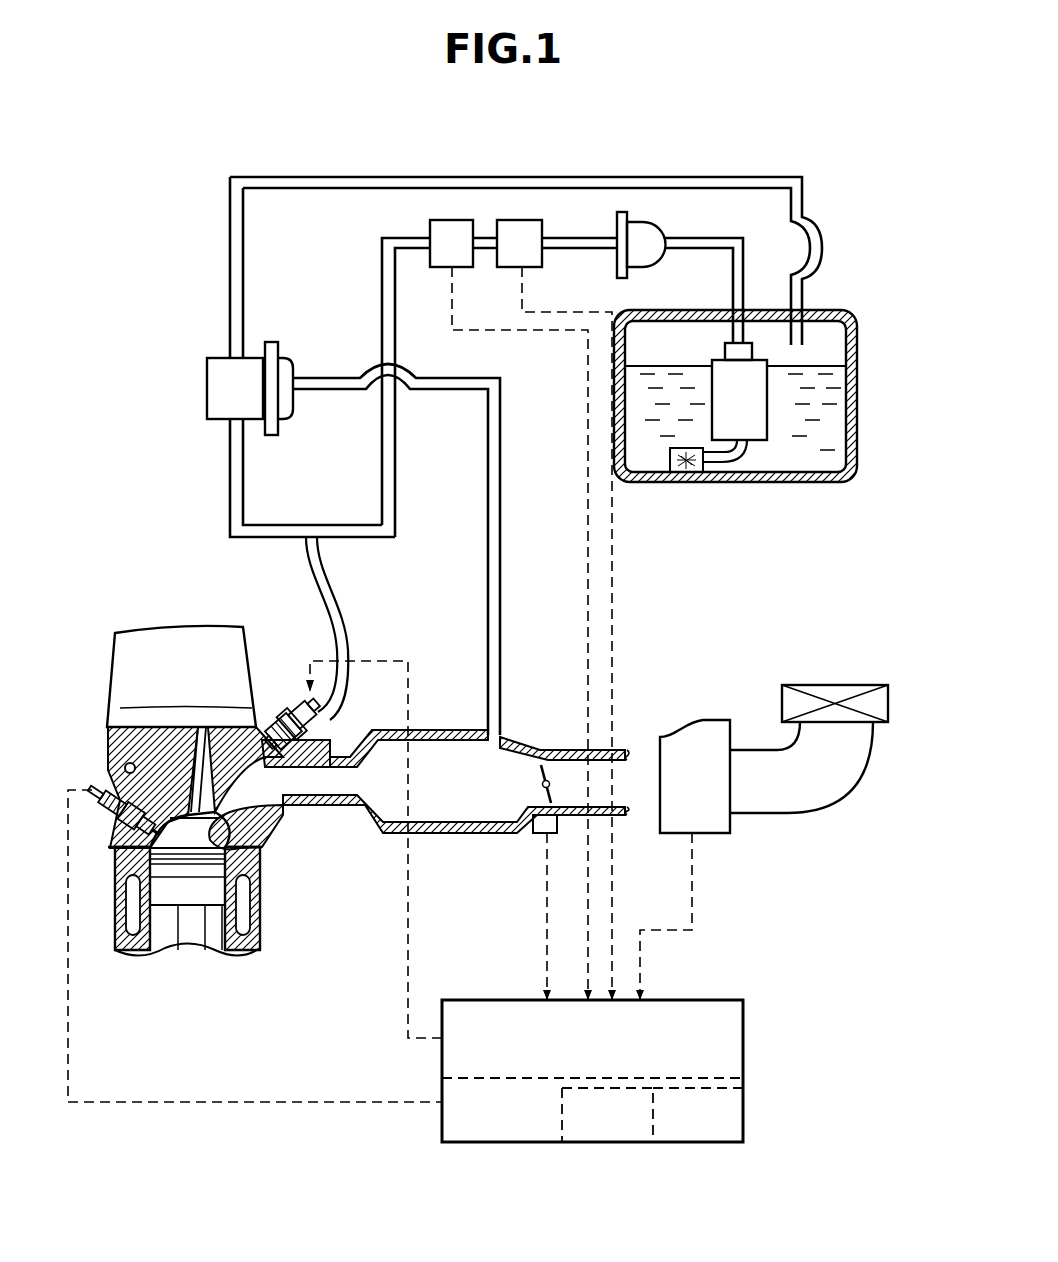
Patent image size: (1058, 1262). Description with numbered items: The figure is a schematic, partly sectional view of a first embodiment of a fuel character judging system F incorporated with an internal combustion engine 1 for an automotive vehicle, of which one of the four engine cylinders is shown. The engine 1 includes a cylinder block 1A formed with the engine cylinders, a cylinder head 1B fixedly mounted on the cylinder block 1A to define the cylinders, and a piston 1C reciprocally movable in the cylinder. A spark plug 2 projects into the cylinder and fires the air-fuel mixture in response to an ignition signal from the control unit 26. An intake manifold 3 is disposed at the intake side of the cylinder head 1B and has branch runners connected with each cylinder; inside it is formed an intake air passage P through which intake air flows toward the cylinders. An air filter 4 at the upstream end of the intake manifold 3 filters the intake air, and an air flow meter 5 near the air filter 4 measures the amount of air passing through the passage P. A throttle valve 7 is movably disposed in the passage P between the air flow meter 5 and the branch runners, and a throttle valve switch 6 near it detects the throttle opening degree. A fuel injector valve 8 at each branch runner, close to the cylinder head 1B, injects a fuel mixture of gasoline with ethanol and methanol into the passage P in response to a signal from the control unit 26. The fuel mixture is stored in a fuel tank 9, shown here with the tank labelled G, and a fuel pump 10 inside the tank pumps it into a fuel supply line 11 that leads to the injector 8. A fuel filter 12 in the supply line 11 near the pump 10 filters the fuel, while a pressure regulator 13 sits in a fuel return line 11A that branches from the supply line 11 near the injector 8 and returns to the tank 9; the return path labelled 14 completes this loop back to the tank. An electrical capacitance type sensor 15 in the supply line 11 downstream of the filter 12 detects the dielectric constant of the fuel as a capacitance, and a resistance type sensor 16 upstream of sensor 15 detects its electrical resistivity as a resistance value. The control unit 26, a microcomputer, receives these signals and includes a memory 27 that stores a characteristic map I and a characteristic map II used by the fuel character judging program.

The internal combustion engine 1 is at (112, 685).
The cylinder block 1A is at (253, 920).
The cylinder head 1B is at (120, 755).
The piston 1C is at (198, 886).
The spark plug 2 is at (118, 812).
The intake manifold 3 is at (447, 833).
The air filter 4 is at (837, 690).
The air flow meter 5 is at (677, 743).
The throttle valve switch 6 is at (538, 837).
The throttle valve 7 is at (553, 760).
The fuel injector valve 8 is at (285, 707).
The fuel tank 9 is at (658, 483).
The fuel pump 10 is at (757, 430).
The fuel supply line 11 is at (382, 272).
The fuel return line 11A is at (290, 175).
The fuel filter 12 is at (647, 227).
The pressure regulator 13 is at (207, 382).
The return pipe 14 is at (230, 280).
The electrical capacitance type sensor 15 is at (455, 220).
The resistance type sensor 16 is at (528, 220).
The control unit 26 is at (737, 1028).
The memory 27 is at (487, 1142).
The fuel tank G is at (830, 460).
The intake air passage P is at (618, 770).
The fuel character judging system F is at (750, 932).
The characteristic map I is at (622, 1142).
The characteristic map II is at (723, 1142).